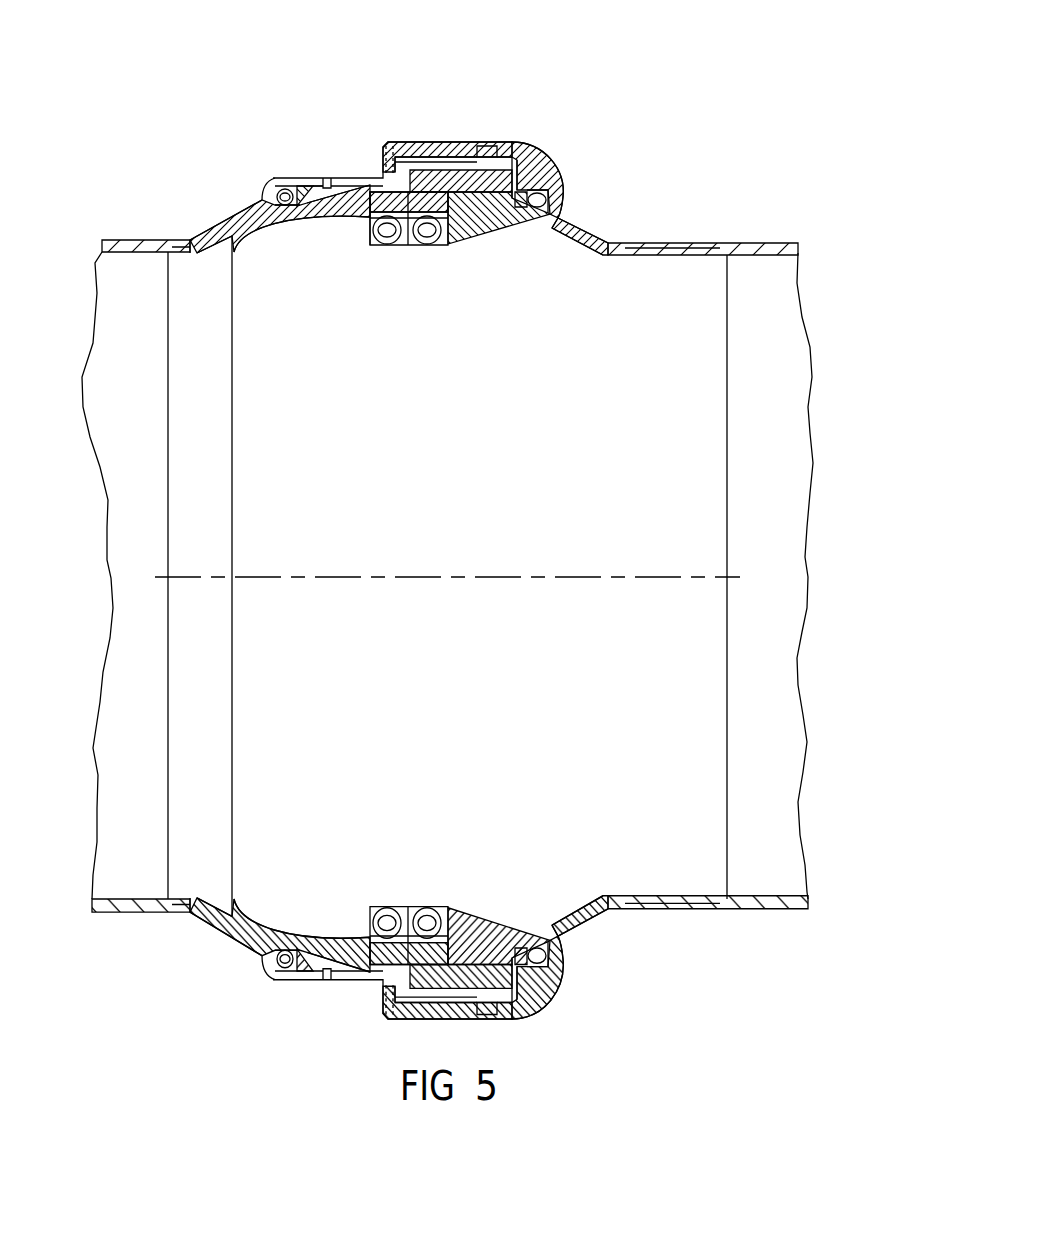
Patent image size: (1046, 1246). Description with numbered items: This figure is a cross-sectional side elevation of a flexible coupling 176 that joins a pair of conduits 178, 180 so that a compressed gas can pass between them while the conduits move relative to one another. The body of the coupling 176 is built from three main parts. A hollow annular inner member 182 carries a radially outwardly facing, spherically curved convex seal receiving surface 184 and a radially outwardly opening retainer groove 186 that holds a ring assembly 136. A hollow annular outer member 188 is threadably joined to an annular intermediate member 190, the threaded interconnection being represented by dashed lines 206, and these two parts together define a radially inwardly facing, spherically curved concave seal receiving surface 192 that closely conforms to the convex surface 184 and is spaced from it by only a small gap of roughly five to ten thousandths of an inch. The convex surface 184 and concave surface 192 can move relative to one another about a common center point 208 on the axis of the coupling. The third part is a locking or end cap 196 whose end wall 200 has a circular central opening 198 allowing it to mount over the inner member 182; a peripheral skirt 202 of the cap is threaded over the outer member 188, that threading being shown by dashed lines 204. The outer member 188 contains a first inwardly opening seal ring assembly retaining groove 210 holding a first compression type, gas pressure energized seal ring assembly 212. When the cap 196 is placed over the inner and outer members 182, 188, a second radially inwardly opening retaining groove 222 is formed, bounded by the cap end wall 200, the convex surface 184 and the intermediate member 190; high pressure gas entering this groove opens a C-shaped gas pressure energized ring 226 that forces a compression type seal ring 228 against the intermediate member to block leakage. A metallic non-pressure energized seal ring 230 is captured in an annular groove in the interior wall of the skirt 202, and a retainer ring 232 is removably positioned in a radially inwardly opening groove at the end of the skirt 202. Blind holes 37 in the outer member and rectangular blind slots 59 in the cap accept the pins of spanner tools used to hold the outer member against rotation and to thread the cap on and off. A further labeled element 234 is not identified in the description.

The blind holes 37 is at (327, 178).
The blind slots 59 is at (522, 142).
The ring assembly 136 is at (368, 207).
The flexible coupling 176 is at (670, 98).
The conduit 178 is at (757, 243).
The conduit 180 is at (134, 240).
The inner member 182 is at (456, 256).
The convex seal receiving surface 184 is at (330, 180).
The ring assembly retainer groove 186 is at (402, 246).
The outer member 188 is at (240, 228).
The intermediate member 190 is at (502, 152).
The concave seal receiving surface 192 is at (326, 935).
The end cap 196 is at (542, 146).
The circular central opening 198 is at (557, 236).
The end wall 200 is at (562, 178).
The peripheral skirt 202 is at (436, 142).
The threading 204 is at (460, 142).
The threading 206 is at (410, 142).
The common center point 208 is at (407, 577).
The first seal ring assembly retaining groove 210 is at (288, 948).
The first seal ring assembly 212 is at (298, 180).
The second seal ring assembly retaining groove 222 is at (538, 950).
The gas pressure energized ring 226 is at (532, 198).
The compression type seal ring 228 is at (556, 150).
The metallic non-pressure energized seal ring 230 is at (462, 243).
The retainer ring 232 is at (382, 148).
The retainer 234 is at (516, 225).